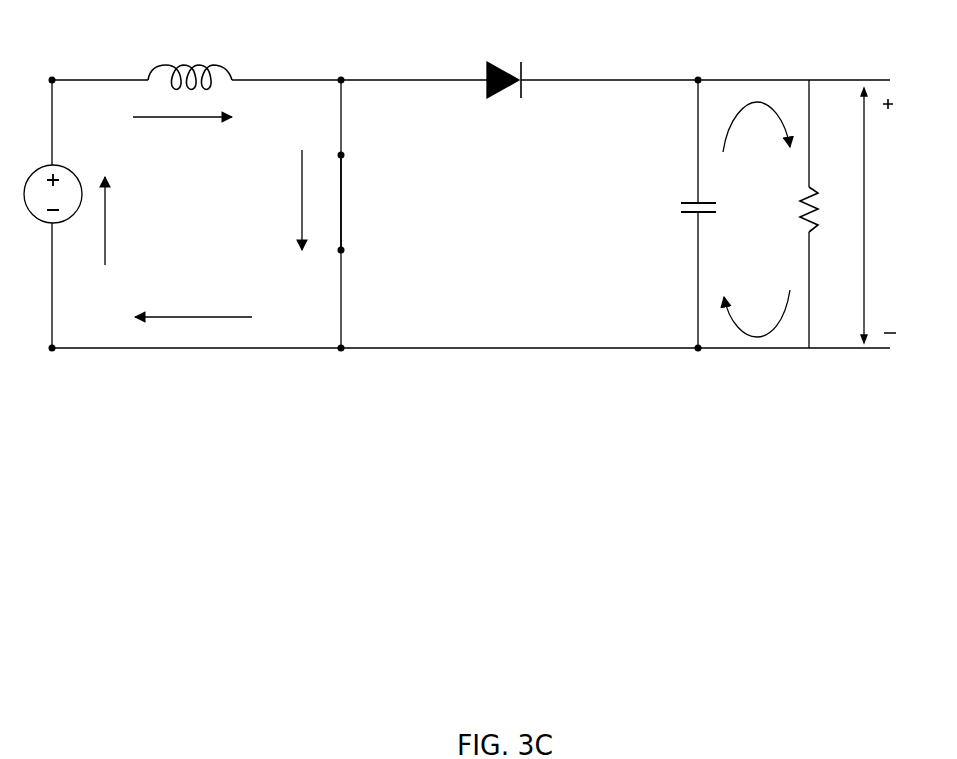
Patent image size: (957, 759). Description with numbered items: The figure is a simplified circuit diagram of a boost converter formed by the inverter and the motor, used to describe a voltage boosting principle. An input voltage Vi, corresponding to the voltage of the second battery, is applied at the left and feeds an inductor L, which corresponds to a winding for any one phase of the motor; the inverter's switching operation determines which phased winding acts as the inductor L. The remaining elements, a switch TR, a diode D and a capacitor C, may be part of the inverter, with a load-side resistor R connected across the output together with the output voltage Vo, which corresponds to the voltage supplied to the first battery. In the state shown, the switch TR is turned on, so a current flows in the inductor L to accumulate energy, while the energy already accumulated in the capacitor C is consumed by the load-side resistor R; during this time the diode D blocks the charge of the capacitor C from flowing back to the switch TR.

The input voltage Vi is at (53, 181).
The inductor L is at (190, 64).
The switch TR is at (361, 202).
The diode D is at (504, 69).
The capacitor C is at (689, 210).
The load-side resistor R is at (799, 209).
The output voltage Vo is at (878, 215).